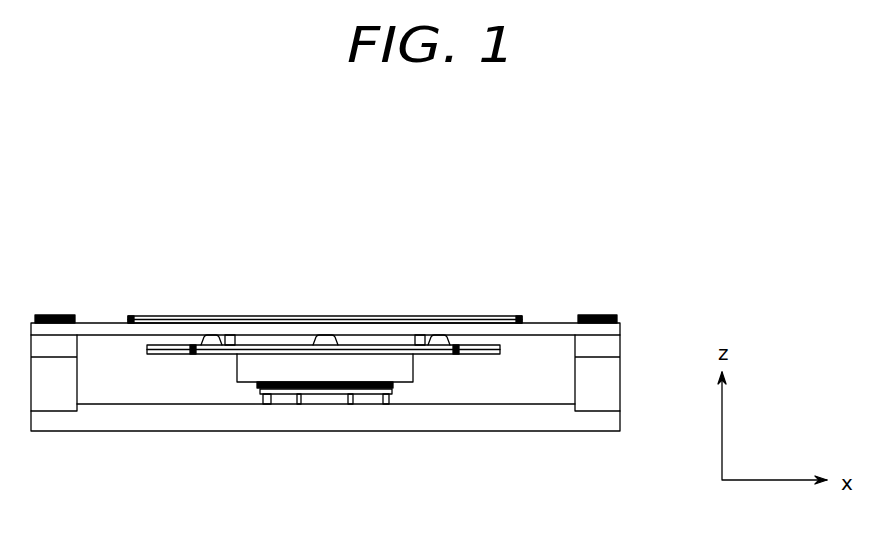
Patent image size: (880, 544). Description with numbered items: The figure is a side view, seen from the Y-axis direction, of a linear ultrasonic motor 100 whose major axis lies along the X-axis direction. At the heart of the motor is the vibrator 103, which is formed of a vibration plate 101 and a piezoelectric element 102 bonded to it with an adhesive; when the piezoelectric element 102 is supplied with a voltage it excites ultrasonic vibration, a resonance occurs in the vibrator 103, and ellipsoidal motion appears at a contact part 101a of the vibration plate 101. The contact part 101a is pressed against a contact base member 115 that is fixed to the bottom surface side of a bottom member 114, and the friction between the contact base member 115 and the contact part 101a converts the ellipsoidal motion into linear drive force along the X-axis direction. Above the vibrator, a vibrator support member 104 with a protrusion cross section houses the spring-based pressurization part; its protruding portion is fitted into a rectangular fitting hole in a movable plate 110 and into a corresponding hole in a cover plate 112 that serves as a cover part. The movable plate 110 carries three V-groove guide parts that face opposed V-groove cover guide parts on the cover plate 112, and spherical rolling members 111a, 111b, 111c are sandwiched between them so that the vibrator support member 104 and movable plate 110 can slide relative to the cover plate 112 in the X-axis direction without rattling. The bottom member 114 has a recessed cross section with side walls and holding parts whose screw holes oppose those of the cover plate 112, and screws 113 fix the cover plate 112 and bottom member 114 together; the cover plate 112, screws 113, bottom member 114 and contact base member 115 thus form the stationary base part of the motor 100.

The linear ultrasonic motor 100 is at (172, 262).
The vibration plate 101 is at (263, 398).
The contact part 101a is at (281, 406).
The piezoelectric element 102 is at (240, 384).
The vibrator 103 is at (248, 478).
The vibrator support member 104 is at (453, 357).
The movable plate 110 is at (495, 356).
The rolling member 111a is at (440, 335).
The rolling member 111b is at (218, 334).
The rolling member 111c is at (327, 335).
The cover plate 112 is at (546, 323).
The screws 113 is at (58, 314).
The bottom member 114 is at (428, 432).
The contact base member 115 is at (152, 412).